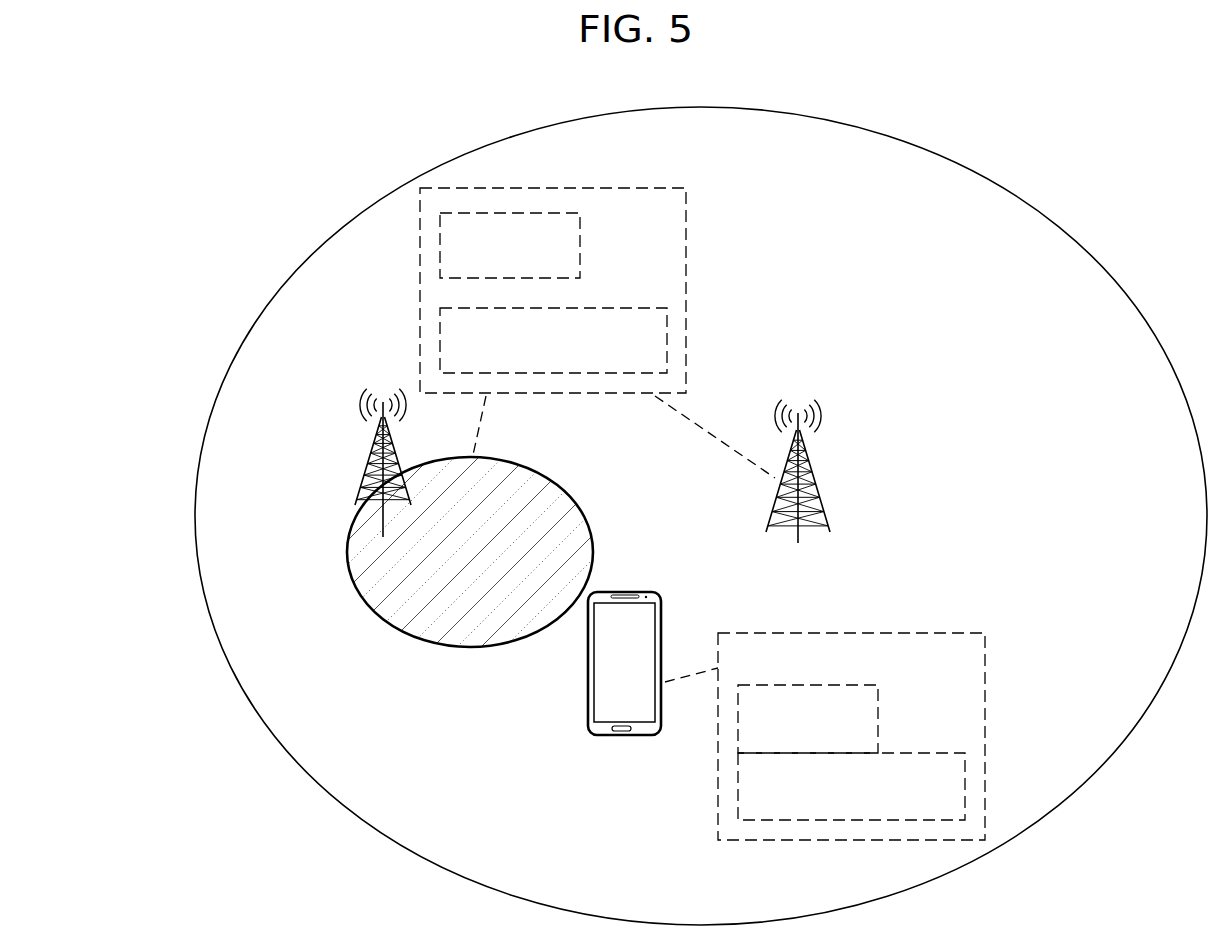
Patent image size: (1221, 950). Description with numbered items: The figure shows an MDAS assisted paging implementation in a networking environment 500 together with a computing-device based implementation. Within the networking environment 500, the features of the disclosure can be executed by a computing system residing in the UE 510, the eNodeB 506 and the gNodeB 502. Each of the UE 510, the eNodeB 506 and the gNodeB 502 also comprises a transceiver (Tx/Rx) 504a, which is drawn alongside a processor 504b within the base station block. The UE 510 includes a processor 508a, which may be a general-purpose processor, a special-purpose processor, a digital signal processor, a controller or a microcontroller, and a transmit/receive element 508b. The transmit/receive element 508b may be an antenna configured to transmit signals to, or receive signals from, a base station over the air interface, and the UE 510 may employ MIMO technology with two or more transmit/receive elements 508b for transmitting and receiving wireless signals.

The networking environment 500 is at (380, 150).
The gNodeB 502 is at (347, 545).
The transceiver (Tx/Rx) 504a is at (440, 252).
The gNB processor 504b is at (440, 344).
The eNodeB 506 is at (818, 478).
The processor 508a is at (738, 790).
The transmit/receive element 508b is at (738, 730).
The UE 510 is at (590, 737).